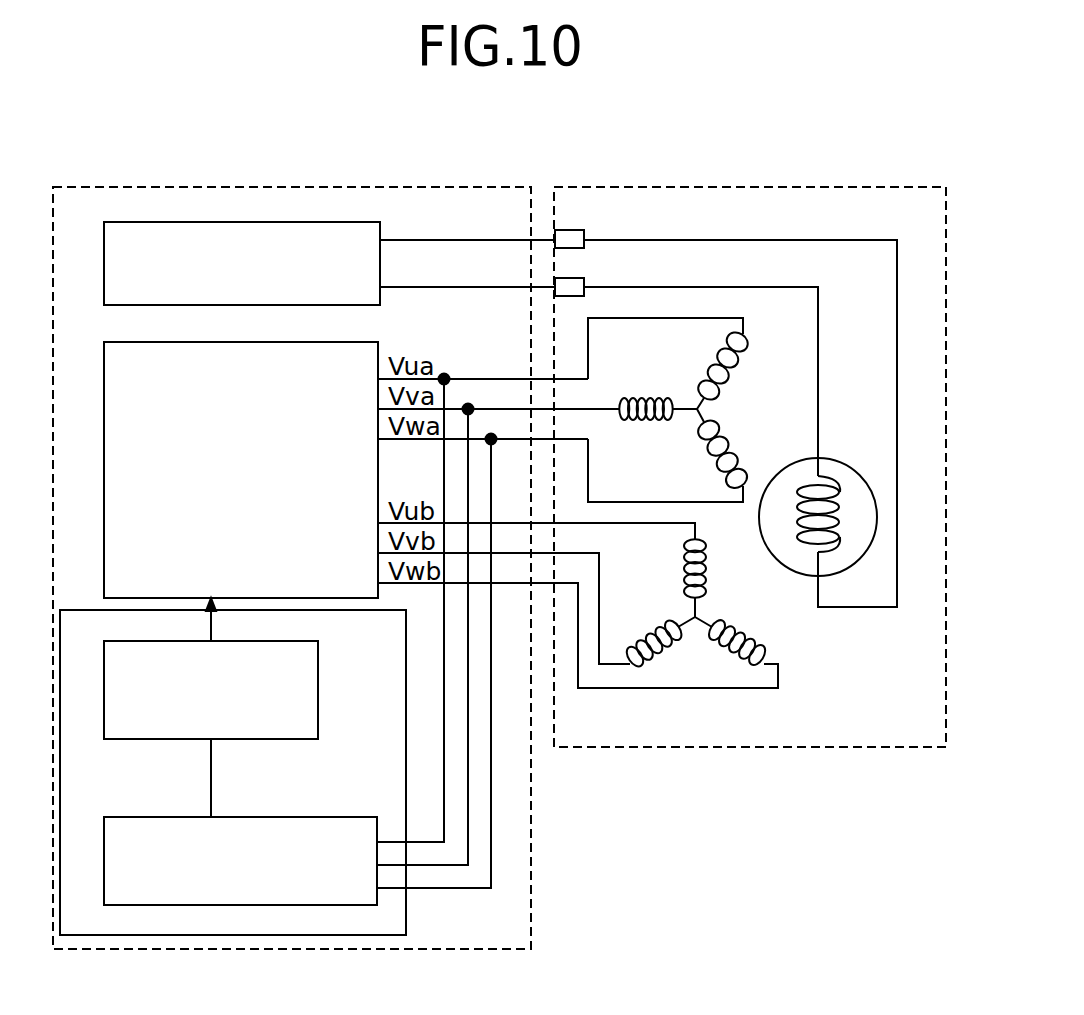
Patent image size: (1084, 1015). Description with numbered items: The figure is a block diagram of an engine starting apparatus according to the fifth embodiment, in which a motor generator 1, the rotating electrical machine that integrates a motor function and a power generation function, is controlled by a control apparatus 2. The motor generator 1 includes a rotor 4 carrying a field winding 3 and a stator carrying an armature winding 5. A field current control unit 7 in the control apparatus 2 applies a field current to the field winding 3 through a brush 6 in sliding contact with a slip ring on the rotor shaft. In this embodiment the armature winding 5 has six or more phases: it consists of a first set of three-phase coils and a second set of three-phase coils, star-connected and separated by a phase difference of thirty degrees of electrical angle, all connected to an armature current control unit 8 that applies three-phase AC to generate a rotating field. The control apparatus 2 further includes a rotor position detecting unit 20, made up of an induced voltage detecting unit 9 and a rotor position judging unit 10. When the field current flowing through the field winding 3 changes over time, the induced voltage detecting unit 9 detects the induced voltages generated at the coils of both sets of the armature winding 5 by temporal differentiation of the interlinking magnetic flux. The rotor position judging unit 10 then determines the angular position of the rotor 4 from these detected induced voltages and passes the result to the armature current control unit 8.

The motor generator 1 is at (909, 180).
The control apparatus 2 is at (504, 180).
The field winding 3 is at (840, 505).
The rotor 4 is at (805, 575).
The armature winding 5 is at (750, 718).
The brush 6 is at (588, 278).
The field current control unit 7 is at (120, 222).
The armature current control unit 8 is at (130, 342).
The induced voltage detecting unit 9 is at (125, 817).
The rotor position judging unit 10 is at (125, 641).
The rotor position detecting unit 20 is at (93, 610).